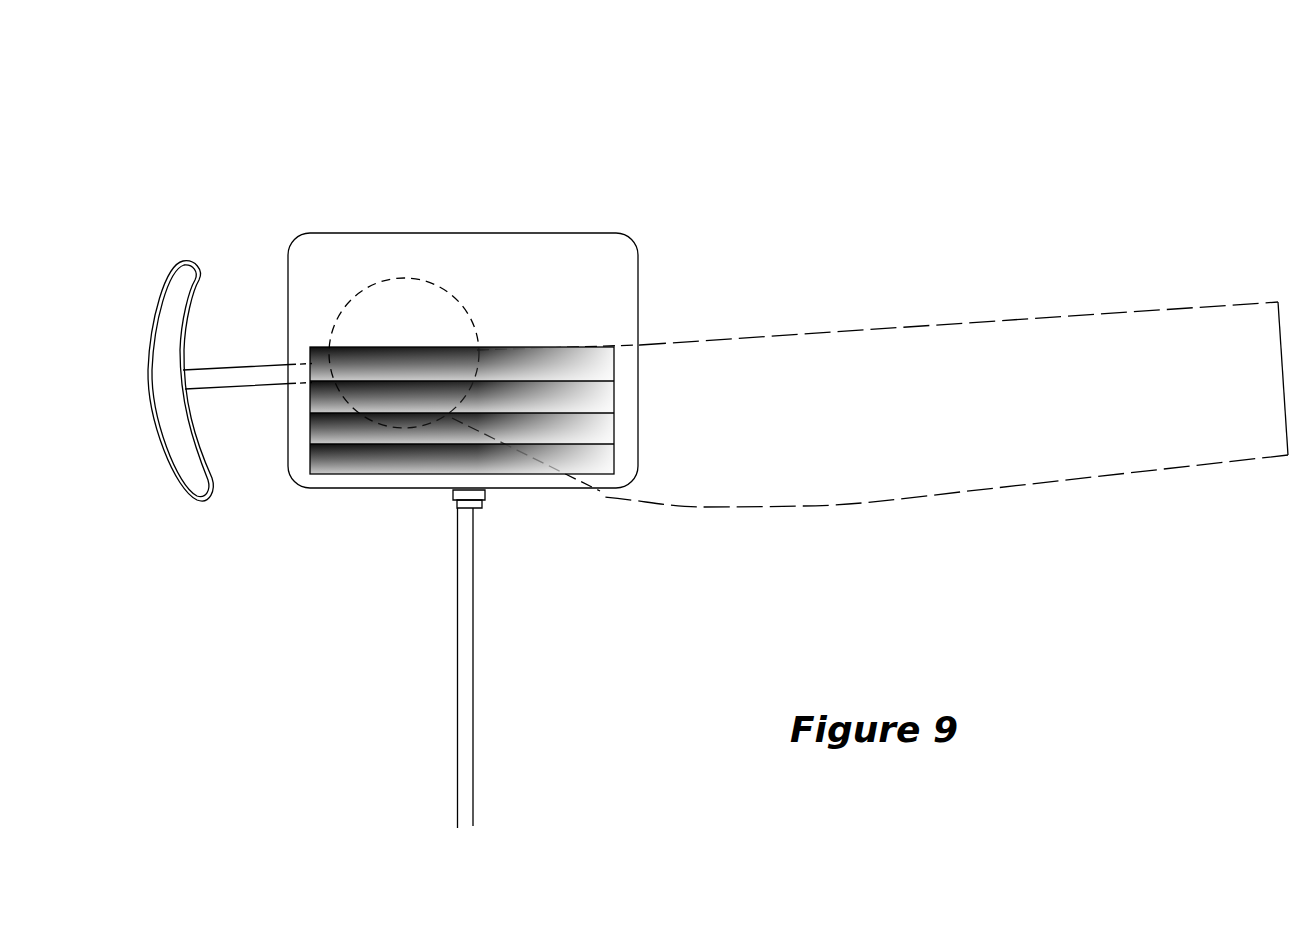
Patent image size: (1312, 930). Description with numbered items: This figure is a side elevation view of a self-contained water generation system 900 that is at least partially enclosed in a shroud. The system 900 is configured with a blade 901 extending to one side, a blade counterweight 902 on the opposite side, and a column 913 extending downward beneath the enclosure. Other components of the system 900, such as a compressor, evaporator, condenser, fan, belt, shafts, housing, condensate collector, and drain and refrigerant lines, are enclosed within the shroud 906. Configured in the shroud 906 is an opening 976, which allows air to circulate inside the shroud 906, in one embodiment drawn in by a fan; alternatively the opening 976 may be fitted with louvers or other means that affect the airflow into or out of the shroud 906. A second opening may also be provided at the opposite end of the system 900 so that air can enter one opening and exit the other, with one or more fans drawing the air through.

The system 900 is at (303, 128).
The blade 901 is at (868, 500).
The blade counterweight 902 is at (200, 295).
The shroud 906 is at (640, 262).
The column 913 is at (457, 640).
The opening 976 is at (388, 474).